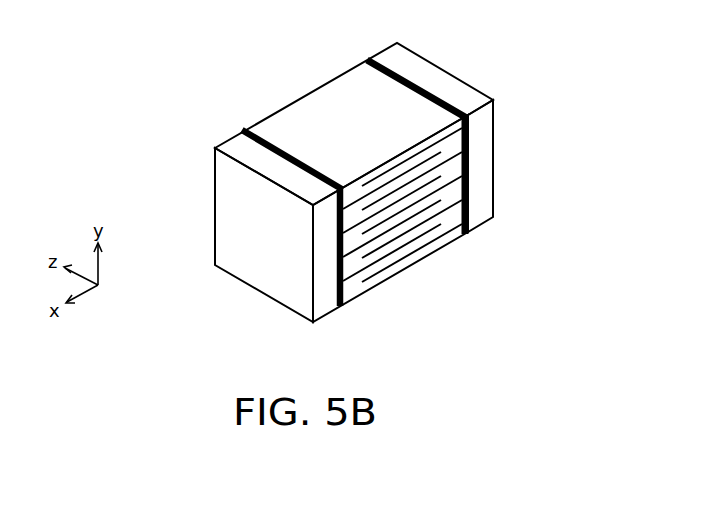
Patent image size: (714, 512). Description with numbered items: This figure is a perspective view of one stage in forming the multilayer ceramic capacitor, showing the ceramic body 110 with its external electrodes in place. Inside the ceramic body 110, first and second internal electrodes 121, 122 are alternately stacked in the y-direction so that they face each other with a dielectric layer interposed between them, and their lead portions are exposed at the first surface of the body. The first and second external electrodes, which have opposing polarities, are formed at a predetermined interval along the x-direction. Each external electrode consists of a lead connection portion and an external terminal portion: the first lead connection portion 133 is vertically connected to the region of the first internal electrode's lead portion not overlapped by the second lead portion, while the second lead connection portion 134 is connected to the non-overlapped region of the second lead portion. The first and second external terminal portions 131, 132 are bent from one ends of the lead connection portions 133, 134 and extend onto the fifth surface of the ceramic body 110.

The ceramic body 110 is at (334, 105).
The first internal electrode 121 is at (433, 150).
The second internal electrode 122 is at (412, 183).
The first external terminal portion 131 is at (293, 157).
The second external terminal portion 132 is at (453, 105).
The first lead connection portion 133 is at (336, 245).
The second lead connection portion 134 is at (464, 181).